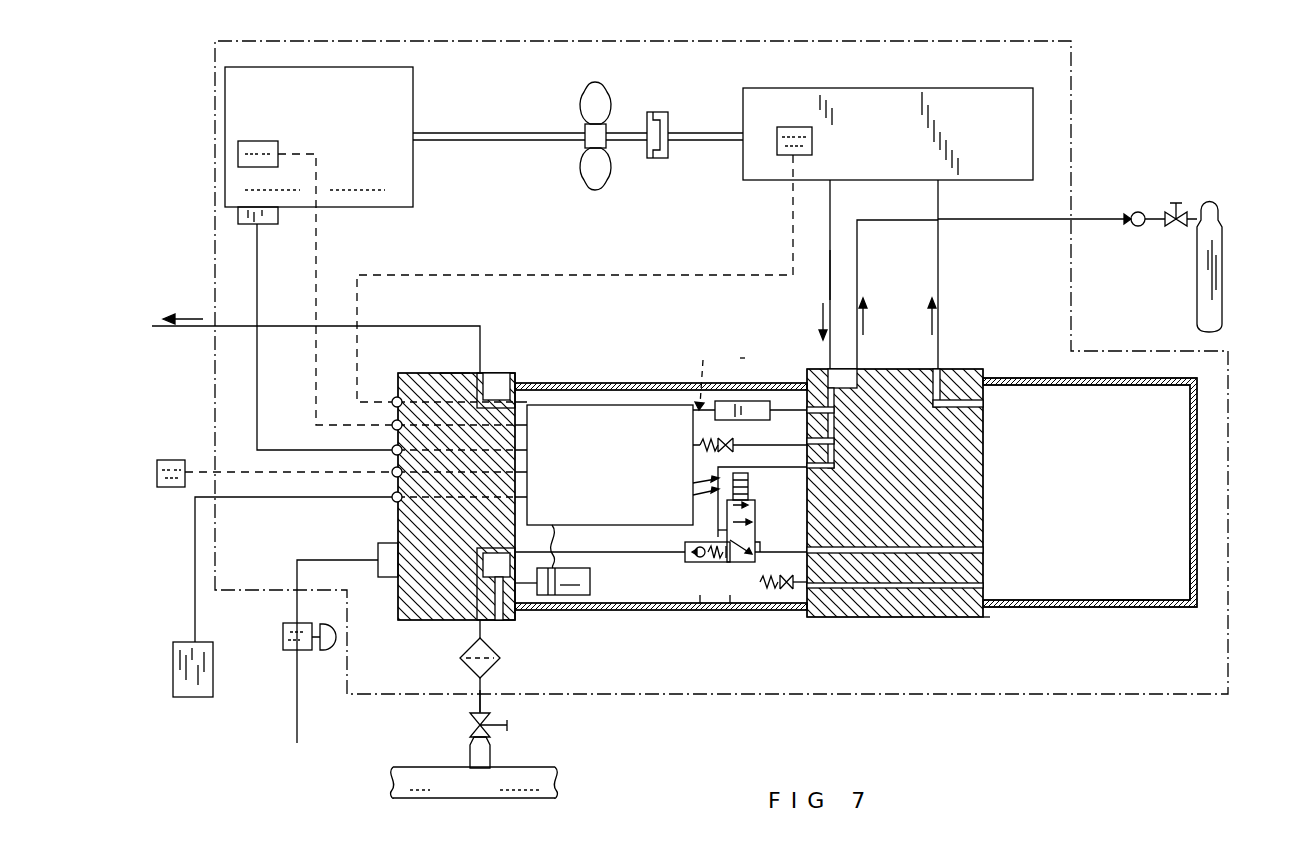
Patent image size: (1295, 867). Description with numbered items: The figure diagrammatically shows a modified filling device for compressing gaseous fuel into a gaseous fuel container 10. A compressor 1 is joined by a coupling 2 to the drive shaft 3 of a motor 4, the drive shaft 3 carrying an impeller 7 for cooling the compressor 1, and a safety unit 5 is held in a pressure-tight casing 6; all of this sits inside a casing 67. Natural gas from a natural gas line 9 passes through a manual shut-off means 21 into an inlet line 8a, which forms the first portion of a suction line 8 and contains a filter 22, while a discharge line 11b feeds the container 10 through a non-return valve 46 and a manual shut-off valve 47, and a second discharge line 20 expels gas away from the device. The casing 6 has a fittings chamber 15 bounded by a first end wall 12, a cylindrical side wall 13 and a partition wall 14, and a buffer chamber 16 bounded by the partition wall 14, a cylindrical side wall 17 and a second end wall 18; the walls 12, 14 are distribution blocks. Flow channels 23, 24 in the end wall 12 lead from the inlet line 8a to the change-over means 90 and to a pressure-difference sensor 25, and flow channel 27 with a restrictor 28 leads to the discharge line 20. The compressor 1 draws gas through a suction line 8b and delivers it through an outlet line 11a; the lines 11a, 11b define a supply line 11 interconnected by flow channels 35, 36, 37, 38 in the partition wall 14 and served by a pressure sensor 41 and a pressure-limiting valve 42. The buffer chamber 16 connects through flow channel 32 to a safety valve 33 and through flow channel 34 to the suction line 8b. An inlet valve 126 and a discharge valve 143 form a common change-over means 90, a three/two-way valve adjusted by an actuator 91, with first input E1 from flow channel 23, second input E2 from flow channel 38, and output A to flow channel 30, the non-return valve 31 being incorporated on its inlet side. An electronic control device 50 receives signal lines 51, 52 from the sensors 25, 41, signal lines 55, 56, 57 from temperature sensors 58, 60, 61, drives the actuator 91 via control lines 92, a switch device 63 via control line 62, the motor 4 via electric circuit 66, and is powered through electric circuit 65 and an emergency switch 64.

The compressor 1 is at (975, 148).
The coupling 2 is at (661, 112).
The drive shaft 3 is at (492, 131).
The motor 4 is at (400, 102).
The safety unit 5 is at (742, 356).
The pressure-tight casing 6 is at (992, 621).
The impeller 7 is at (601, 170).
The suction line 8 is at (950, 276).
The inlet line 8a is at (479, 705).
The suction line 8b is at (938, 241).
The natural gas line 9 is at (512, 775).
The gaseous fuel container 10 is at (1200, 272).
The supply line 11 is at (821, 261).
The outlet line 11a is at (833, 209).
The discharge line 11b is at (973, 220).
The first end wall 12 is at (410, 605).
The cylindrical side wall 13 is at (657, 612).
The partition wall 14 is at (845, 619).
The fittings chamber 15 is at (727, 612).
The buffer chamber 16 is at (1168, 585).
The cylindrical side wall 17 is at (1123, 607).
The second end wall 18 is at (1200, 498).
The discharge line 20 is at (413, 323).
The manual shut-off means 21 is at (475, 727).
The filter 22 is at (466, 665).
The flow channel 23 is at (455, 618).
The flow channel 24 is at (502, 620).
The pressure-difference sensor 25 is at (580, 596).
The flow channel 27 is at (497, 402).
The restrictor 28 is at (452, 373).
The flow channel 30 is at (897, 553).
The non-return valve 31 is at (658, 592).
The flow channel 32 is at (947, 588).
The safety valve 33 is at (793, 612).
The flow channel 34 is at (984, 405).
The flow channel 35 is at (866, 372).
The flow channel 36 is at (807, 425).
The flow channel 37 is at (828, 435).
The flow channel 38 is at (825, 472).
The pressure sensor 41 is at (745, 402).
The pressure-limiting valve 42 is at (725, 453).
The non-return valve 46 is at (1142, 212).
The manual shut-off valve 47 is at (1170, 228).
The electronic control device 50 is at (592, 413).
The signal line 51 is at (555, 527).
The signal line 52 is at (703, 375).
The signal line 55 is at (250, 472).
The signal line 56 is at (318, 248).
The signal line 57 is at (793, 248).
The temperature sensor 58 is at (170, 459).
The temperature sensor 60 is at (265, 143).
The temperature sensor 61 is at (813, 142).
The control line 62 is at (267, 499).
The switch device 63 is at (212, 680).
The emergency switch 64 is at (290, 638).
The electric circuit 65 is at (322, 561).
The electric circuit 66 is at (258, 286).
The casing 67 is at (212, 275).
The change-over means 90 is at (745, 566).
The actuator 91 is at (750, 496).
The control lines 92 is at (690, 487).
The inlet valve 126 is at (755, 513).
The discharge valve 143 is at (708, 592).
The first input E1 is at (683, 553).
The second input E2 is at (718, 530).
The output A is at (759, 553).